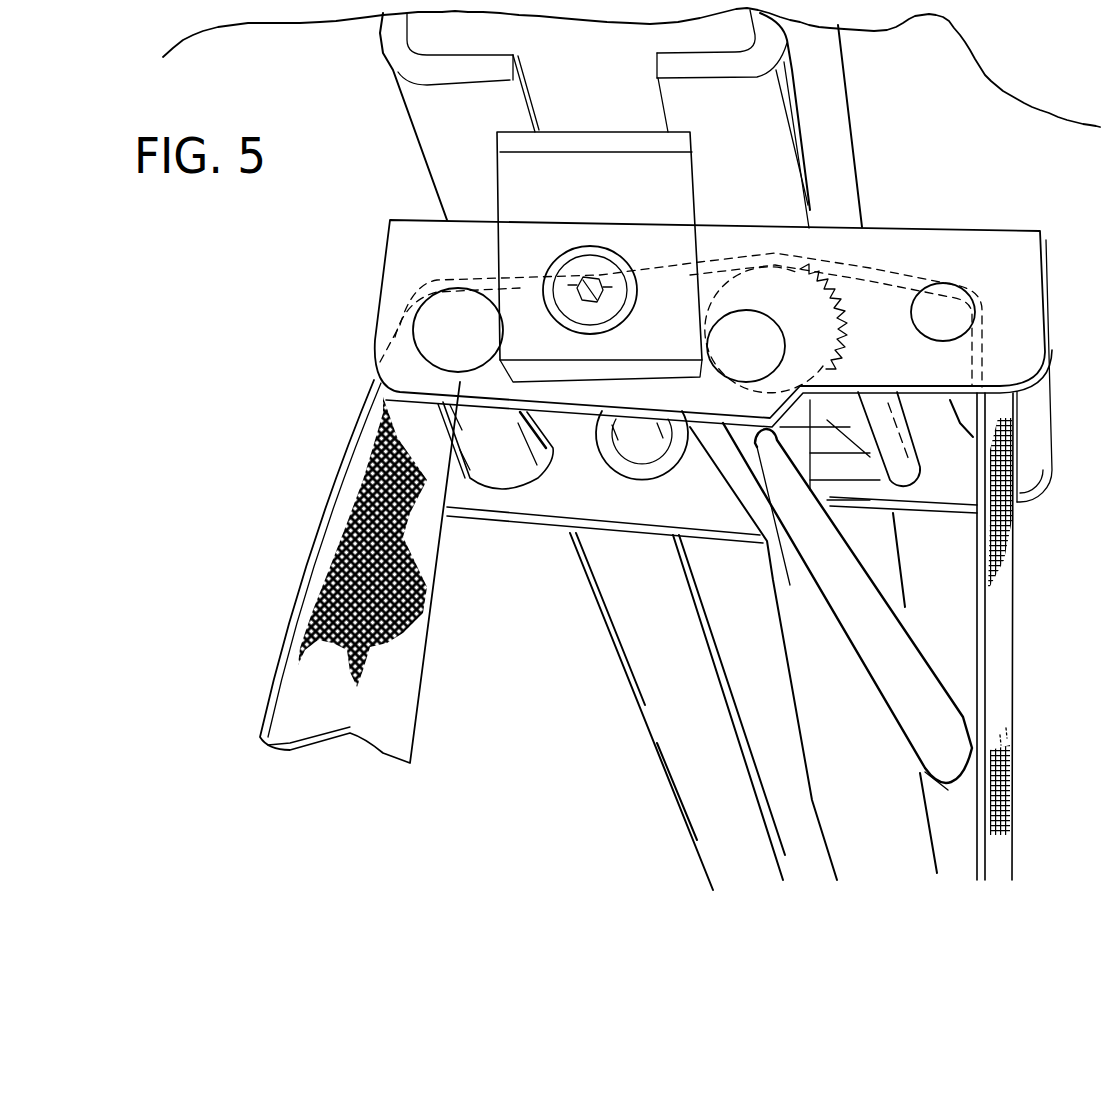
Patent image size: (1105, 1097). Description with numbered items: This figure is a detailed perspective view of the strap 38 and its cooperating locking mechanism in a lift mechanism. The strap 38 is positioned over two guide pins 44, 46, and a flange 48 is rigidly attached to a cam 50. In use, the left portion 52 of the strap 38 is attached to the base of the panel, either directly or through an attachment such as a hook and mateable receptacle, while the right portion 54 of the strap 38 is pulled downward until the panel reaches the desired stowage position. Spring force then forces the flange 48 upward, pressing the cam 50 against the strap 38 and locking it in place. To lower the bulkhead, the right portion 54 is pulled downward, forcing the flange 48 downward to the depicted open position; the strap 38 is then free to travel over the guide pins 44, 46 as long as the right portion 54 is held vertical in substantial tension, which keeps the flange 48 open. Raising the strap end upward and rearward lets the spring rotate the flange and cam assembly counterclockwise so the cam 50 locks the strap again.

The strap 38 is at (290, 720).
The guide pin 44 is at (433, 328).
The guide pin 46 is at (943, 308).
The flange 48 is at (905, 693).
The cam 50 is at (807, 315).
The left portion of the strap 52 is at (295, 583).
The right portion of the strap 54 is at (1013, 575).